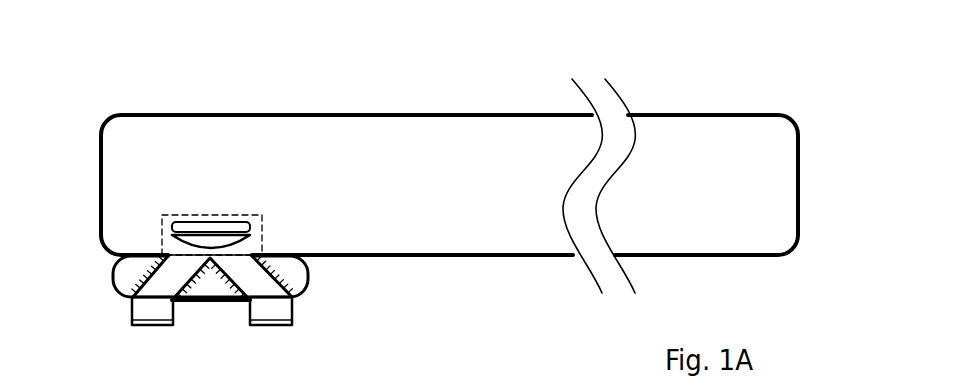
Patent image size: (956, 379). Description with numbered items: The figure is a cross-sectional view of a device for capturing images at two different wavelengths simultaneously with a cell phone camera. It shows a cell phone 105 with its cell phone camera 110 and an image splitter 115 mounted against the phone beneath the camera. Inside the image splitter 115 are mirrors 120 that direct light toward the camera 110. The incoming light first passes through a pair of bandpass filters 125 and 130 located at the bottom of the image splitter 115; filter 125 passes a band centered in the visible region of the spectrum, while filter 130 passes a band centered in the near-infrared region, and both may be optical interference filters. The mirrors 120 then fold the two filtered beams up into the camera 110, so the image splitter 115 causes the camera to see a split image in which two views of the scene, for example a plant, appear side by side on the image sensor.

The cell phone 105 is at (466, 194).
The cell phone camera 110 is at (262, 220).
The image splitter 115 is at (310, 277).
The mirrors 120 is at (143, 275).
The bandpass filter 125 is at (293, 317).
The bandpass filter 130 is at (132, 318).